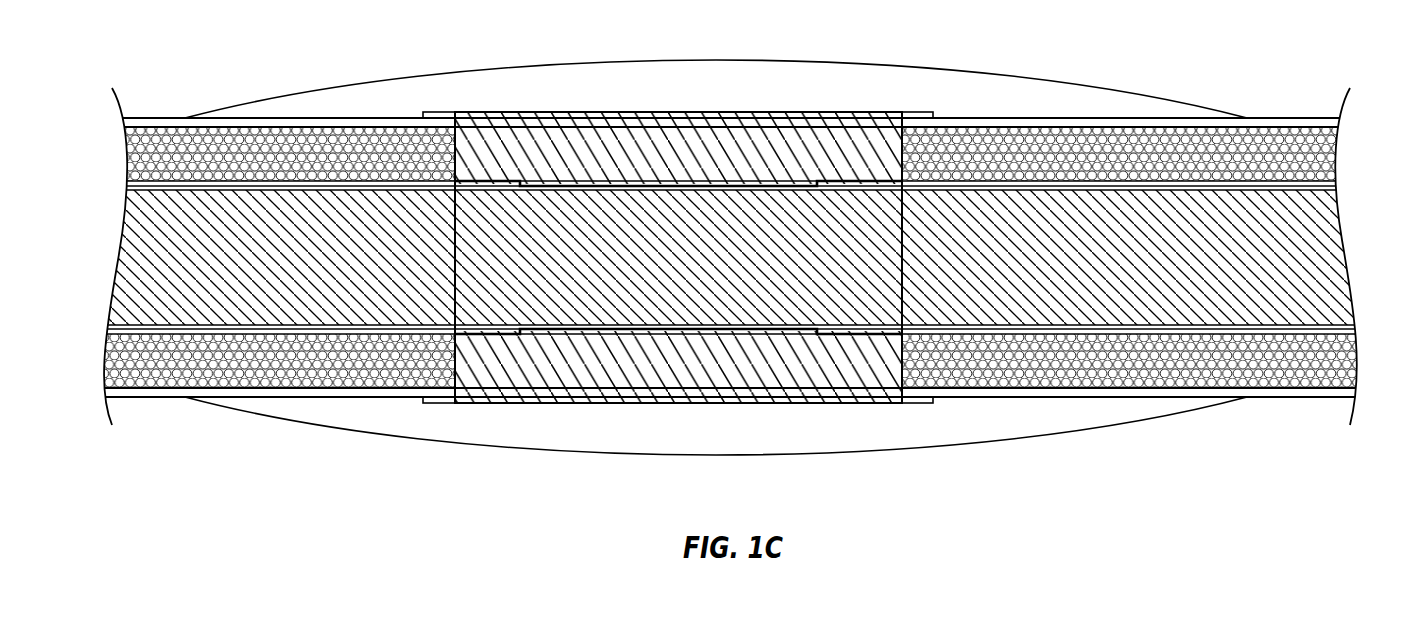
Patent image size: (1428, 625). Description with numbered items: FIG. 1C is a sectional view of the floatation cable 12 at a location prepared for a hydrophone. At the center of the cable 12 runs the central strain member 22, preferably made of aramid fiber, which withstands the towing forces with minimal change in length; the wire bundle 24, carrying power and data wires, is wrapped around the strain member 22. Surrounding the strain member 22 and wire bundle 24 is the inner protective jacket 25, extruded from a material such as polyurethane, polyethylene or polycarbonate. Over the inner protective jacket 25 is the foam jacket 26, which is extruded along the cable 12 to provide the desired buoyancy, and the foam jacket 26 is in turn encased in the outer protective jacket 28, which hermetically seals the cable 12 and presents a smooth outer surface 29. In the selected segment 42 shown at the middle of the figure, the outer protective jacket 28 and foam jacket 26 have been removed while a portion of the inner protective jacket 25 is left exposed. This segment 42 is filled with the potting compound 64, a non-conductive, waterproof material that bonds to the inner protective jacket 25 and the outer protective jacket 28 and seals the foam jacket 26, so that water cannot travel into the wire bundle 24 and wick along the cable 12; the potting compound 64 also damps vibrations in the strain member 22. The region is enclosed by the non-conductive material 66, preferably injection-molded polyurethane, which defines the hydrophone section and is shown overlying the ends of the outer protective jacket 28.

The cable 12 is at (1233, 62).
The central strain member 22 is at (1353, 278).
The wire bundle 24 is at (1222, 275).
The inner protective jacket 25 is at (243, 183).
The foam jacket 26 is at (315, 138).
The outer protective jacket 28 is at (218, 123).
The smooth outer surface 29 is at (1287, 120).
The selected segment 42 is at (702, 110).
The potting compound 64 is at (662, 162).
The non-conductive material 66 is at (475, 103).